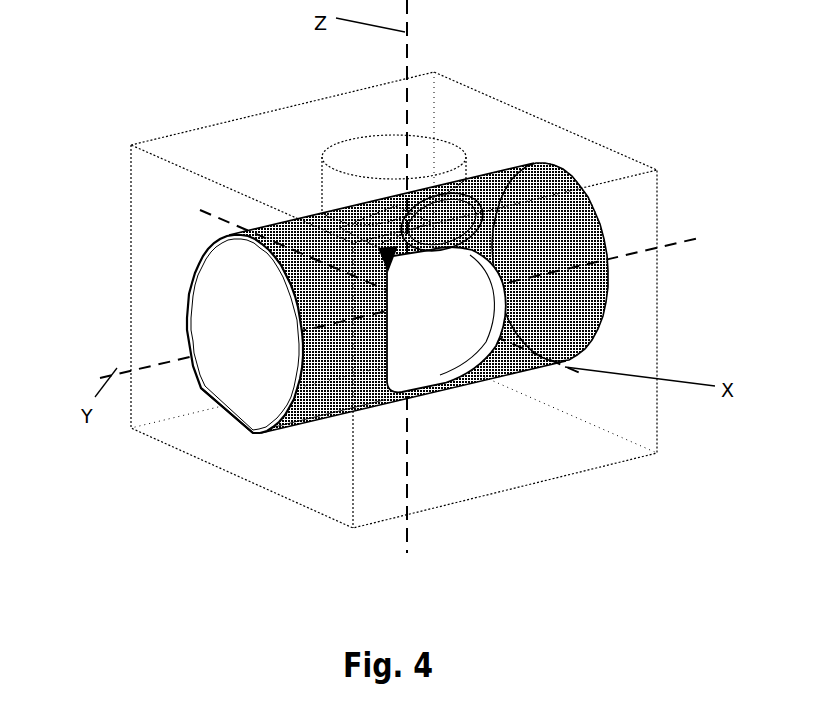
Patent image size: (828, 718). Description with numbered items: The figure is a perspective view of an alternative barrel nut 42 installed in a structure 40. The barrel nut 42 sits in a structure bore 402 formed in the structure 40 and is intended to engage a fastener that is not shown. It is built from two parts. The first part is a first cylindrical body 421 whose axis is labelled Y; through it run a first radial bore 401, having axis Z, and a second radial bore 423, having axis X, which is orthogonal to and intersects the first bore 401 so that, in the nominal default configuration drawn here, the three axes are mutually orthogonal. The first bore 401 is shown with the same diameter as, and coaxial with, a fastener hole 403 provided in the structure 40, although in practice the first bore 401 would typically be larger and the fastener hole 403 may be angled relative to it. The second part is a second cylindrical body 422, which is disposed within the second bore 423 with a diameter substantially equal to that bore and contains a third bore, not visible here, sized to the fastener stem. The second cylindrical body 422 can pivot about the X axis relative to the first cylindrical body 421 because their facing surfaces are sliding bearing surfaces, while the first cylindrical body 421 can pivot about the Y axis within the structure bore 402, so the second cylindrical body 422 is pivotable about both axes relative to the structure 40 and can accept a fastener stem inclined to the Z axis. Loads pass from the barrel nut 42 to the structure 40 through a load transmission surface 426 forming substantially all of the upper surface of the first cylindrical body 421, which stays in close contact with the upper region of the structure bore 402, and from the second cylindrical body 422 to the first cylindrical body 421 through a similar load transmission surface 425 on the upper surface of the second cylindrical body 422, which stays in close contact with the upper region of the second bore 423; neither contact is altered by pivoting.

The structure 40 is at (508, 446).
The barrel nut 42 is at (560, 137).
The first radial bore 401 is at (468, 240).
The structure bore 402 is at (230, 428).
The fastener hole 403 is at (319, 175).
The first cylindrical body 421 is at (213, 297).
The second cylindrical body 422 is at (430, 337).
The second radial bore 423 is at (508, 317).
The load transmission surface 425 is at (472, 228).
The load transmission surface 426 is at (287, 228).